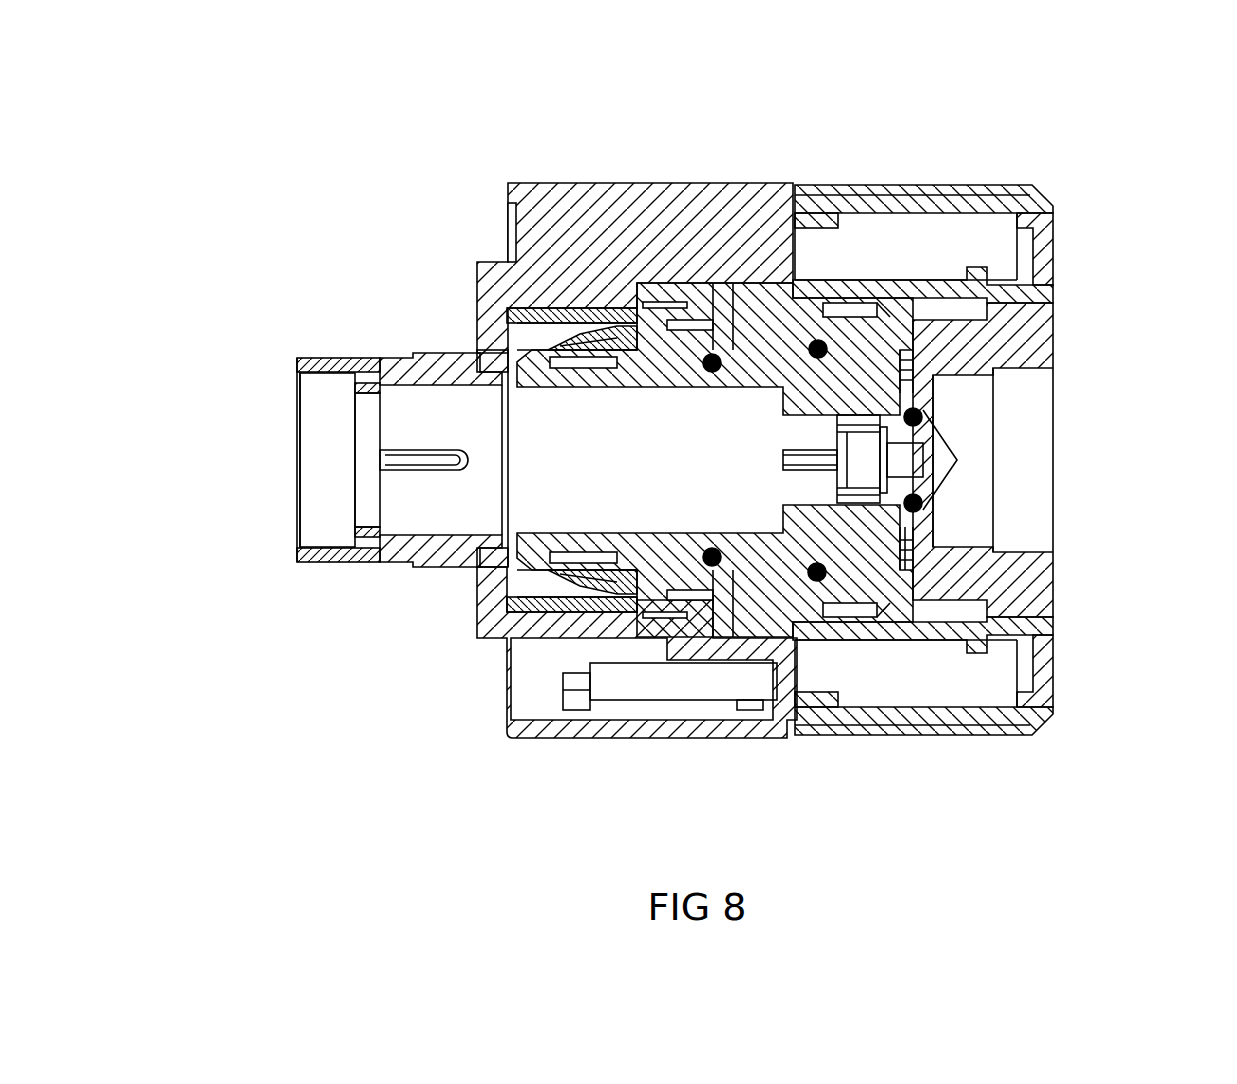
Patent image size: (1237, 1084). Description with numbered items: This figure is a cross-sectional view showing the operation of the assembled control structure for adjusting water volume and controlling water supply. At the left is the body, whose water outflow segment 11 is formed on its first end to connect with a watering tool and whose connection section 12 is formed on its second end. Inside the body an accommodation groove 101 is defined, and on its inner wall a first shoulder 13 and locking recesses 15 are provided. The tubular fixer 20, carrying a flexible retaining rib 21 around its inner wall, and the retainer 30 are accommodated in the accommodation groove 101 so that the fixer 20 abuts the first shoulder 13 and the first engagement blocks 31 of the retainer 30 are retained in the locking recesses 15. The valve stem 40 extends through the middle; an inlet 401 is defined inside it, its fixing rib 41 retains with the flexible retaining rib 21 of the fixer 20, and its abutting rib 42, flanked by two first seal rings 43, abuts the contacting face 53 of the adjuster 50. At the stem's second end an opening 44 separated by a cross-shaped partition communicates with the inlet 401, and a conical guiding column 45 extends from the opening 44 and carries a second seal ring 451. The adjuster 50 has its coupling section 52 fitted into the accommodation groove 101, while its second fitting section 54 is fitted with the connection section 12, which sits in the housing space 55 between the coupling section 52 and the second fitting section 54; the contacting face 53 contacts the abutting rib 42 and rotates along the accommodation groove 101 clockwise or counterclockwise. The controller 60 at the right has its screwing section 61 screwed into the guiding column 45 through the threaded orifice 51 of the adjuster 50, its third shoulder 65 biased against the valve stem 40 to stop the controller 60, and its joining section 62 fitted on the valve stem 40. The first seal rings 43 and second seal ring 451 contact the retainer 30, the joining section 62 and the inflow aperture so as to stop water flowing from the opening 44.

The water outflow segment 11 is at (297, 430).
The connection section 12 is at (808, 213).
The first shoulder 13 is at (508, 327).
The locking recesses 15 is at (687, 303).
The fixer 20 is at (525, 307).
The flexible retaining rib 21 is at (588, 335).
The retainer 30 is at (652, 622).
The first engagement blocks 31 is at (588, 460).
The valve stem 40 is at (511, 436).
The fixing rib 41 is at (478, 570).
The abutting rib 42 is at (737, 585).
The first seal rings 43 is at (817, 582).
The opening 44 is at (908, 460).
The conical guiding column 45 is at (922, 507).
The adjuster 50 is at (1048, 742).
The threaded orifice 51 is at (883, 460).
The coupling section 52 is at (910, 280).
The contacting face 53 is at (690, 637).
The second fitting section 54 is at (893, 195).
The housing space 55 is at (1002, 228).
The controller 60 is at (1068, 318).
The screwing section 61 is at (850, 617).
The joining section 62 is at (1027, 470).
The third shoulder 65 is at (925, 405).
The accommodation groove 101 is at (537, 307).
The inlet 401 is at (578, 512).
The second seal ring 451 is at (967, 560).